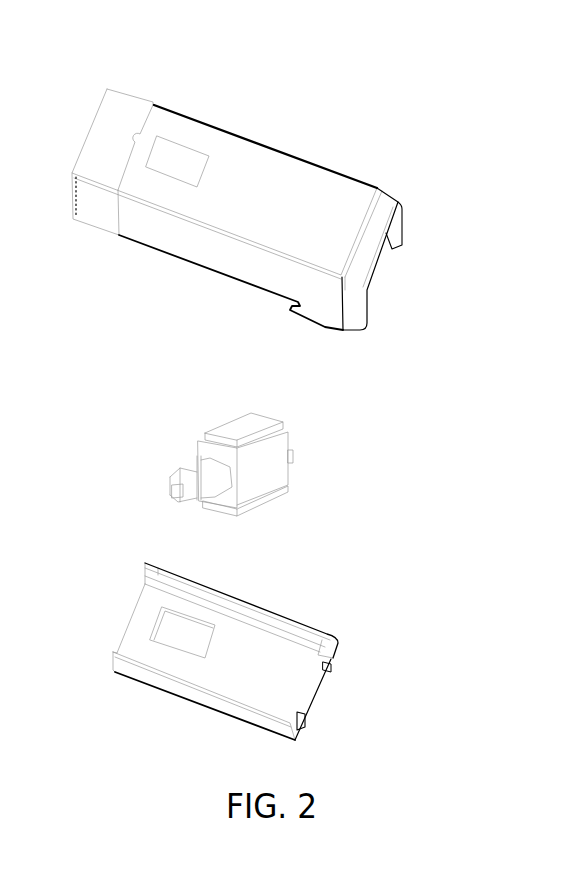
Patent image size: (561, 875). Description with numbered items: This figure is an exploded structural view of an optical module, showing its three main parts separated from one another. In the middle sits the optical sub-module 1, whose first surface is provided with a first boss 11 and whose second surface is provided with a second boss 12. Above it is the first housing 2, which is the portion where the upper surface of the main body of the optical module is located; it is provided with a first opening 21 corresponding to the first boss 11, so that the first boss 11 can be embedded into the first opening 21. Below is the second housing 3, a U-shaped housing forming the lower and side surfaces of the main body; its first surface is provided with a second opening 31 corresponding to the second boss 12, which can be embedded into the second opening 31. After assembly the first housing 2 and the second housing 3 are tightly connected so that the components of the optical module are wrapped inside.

The optical sub-module 1 is at (205, 452).
The first boss 11 is at (251, 425).
The second boss 12 is at (257, 506).
The first housing 2 is at (248, 197).
The first opening 21 is at (182, 162).
The second housing 3 is at (287, 685).
The second opening 31 is at (197, 640).